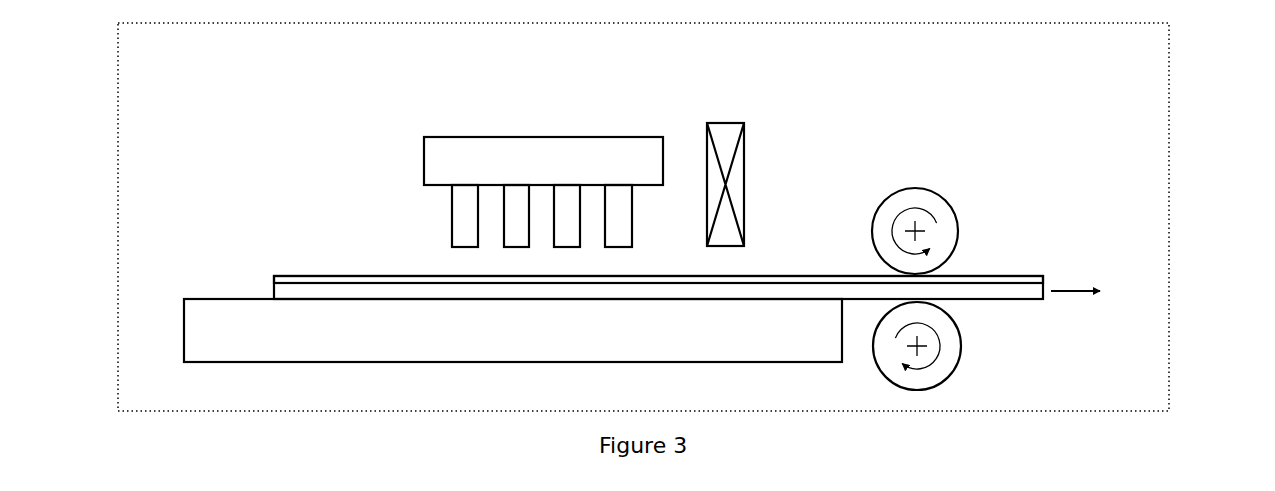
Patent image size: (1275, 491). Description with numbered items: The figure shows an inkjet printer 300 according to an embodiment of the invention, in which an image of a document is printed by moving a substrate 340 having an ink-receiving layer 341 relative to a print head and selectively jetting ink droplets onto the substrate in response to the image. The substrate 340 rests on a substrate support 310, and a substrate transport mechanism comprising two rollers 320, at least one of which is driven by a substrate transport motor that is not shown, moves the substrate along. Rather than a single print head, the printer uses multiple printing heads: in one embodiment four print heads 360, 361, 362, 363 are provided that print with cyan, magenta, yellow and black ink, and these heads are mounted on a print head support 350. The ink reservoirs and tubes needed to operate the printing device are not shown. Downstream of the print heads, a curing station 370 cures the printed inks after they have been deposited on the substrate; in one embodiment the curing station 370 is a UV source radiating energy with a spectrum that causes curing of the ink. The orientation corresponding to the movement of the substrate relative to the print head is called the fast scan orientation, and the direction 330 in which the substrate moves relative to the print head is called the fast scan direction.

The printer 300 is at (1168, 64).
The substrate support 310 is at (207, 299).
The rollers 320 is at (962, 335).
The direction 330 is at (1065, 291).
The substrate 340 is at (298, 290).
The ink-receiving layer 341 is at (345, 278).
The print head support 350 is at (424, 155).
The print head 360 is at (468, 200).
The print head 361 is at (519, 200).
The print head 362 is at (565, 200).
The print head 363 is at (616, 200).
The curing station 370 is at (744, 158).